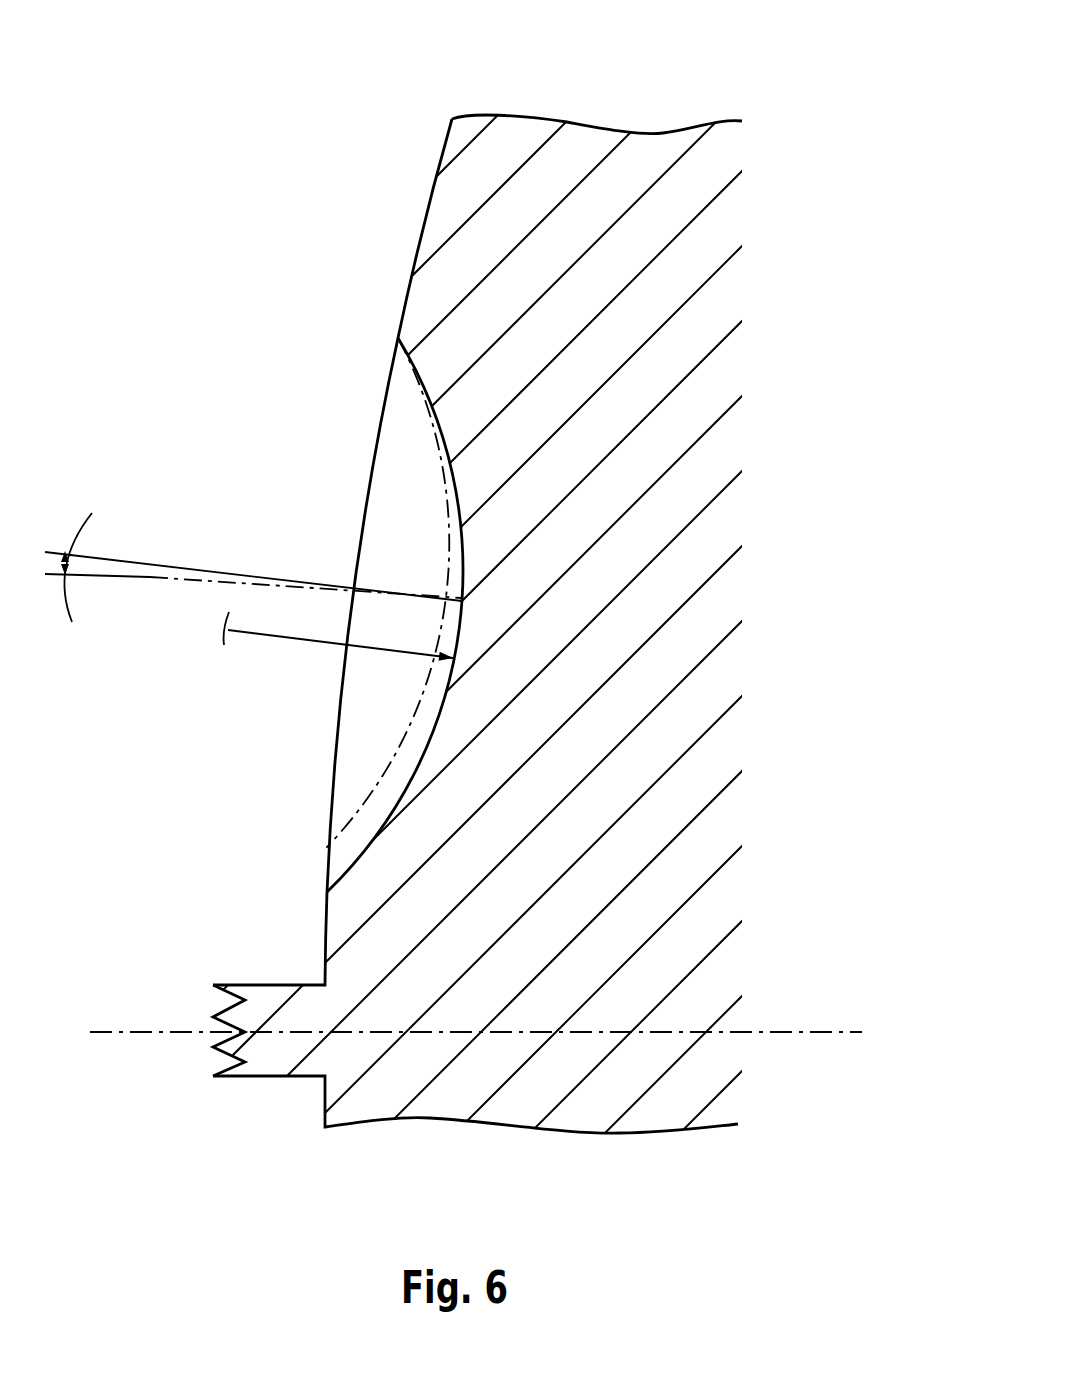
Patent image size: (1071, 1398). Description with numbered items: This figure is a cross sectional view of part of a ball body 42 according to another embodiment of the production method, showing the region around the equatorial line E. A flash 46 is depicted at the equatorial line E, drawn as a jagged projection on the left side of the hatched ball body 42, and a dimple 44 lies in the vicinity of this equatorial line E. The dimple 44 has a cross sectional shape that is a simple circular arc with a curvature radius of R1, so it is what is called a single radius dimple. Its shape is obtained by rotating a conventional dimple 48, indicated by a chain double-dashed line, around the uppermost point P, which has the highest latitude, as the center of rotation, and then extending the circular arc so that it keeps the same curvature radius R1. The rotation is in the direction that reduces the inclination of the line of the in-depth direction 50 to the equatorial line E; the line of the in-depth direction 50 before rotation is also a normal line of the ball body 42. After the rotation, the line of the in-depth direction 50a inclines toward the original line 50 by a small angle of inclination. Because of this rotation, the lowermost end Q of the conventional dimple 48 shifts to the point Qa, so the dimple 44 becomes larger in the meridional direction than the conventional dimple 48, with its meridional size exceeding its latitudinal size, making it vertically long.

The ball body 42 is at (565, 158).
The dimple 44 is at (418, 763).
The flash 46 is at (265, 1060).
The conventional dimple 48 is at (438, 535).
The line of the in-depth direction 50 is at (150, 563).
The line of the in-depth direction after the rotation 50a is at (118, 578).
The uppermost point P is at (398, 338).
The lowermost end Q is at (327, 847).
The shifted lowermost end point Qa is at (327, 892).
The curvature radius R1 is at (338, 645).
The equatorial line E is at (140, 1032).